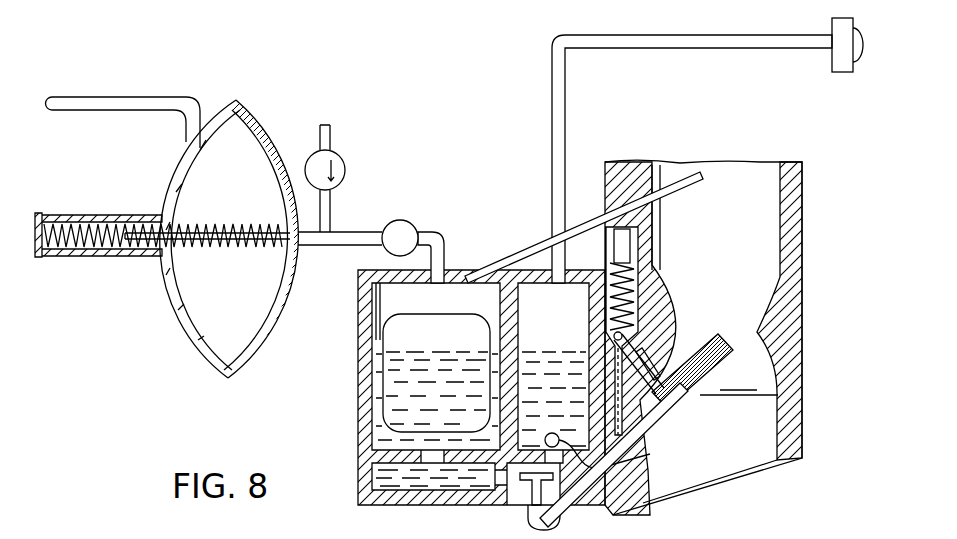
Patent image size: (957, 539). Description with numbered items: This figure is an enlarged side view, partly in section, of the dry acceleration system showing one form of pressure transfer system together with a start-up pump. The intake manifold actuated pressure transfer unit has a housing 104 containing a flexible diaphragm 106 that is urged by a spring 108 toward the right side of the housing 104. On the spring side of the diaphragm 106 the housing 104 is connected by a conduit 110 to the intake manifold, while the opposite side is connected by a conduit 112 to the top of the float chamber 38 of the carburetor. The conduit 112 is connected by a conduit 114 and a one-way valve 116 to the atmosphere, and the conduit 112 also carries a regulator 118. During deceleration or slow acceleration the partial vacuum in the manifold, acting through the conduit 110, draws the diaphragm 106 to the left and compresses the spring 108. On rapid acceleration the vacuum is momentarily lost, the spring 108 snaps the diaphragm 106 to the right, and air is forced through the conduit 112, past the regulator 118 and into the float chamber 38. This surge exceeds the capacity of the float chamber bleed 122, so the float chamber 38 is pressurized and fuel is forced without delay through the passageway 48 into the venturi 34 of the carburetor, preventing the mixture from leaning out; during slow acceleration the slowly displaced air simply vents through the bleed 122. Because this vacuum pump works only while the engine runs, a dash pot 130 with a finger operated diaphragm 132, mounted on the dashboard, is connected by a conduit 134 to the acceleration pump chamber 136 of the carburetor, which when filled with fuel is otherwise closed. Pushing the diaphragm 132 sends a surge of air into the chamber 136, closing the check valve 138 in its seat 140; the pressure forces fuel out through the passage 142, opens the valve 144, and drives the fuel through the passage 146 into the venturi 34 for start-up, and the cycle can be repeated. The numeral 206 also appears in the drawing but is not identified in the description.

The venturi 34 is at (758, 368).
The float chamber 38 is at (387, 307).
The passageway 48 is at (672, 397).
The housing 104 is at (177, 163).
The flexible diaphragm 106 is at (277, 180).
The spring 108 is at (190, 243).
The conduit 110 is at (106, 99).
The conduit 112 is at (343, 248).
The conduit 114 is at (332, 135).
The one-way valve 116 is at (344, 159).
The regulator 118 is at (409, 223).
The float chamber bleed 122 is at (528, 230).
The dash pot 130 is at (847, 72).
The finger operated diaphragm 132 is at (864, 42).
The conduit 134 is at (580, 32).
The acceleration pump chamber 136 is at (593, 292).
The check valve 138 is at (640, 440).
The seat 140 is at (636, 466).
The passage 142 is at (640, 352).
The valve 144 is at (647, 337).
The passage 146 is at (720, 398).
The element 206 is at (299, 534).